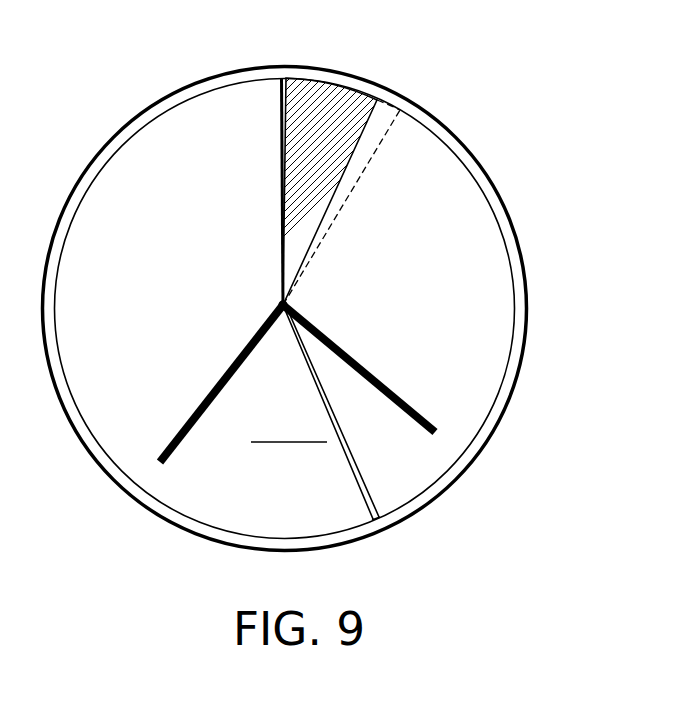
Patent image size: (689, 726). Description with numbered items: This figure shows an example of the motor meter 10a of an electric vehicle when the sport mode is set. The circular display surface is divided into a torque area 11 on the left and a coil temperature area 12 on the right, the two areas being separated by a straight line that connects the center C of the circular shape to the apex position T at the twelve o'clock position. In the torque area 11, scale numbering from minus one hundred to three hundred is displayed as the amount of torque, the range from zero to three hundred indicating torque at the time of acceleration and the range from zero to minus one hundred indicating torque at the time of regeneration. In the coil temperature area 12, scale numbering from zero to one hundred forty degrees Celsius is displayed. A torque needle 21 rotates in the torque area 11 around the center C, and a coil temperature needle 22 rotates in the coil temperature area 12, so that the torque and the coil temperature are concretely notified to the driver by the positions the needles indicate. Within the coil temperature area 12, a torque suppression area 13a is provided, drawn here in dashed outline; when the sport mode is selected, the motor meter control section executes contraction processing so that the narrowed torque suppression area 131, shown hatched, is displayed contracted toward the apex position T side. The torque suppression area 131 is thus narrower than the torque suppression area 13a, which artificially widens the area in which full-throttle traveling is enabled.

The motor meter 10a is at (316, 291).
The torque area 11 is at (102, 158).
The coil temperature area 12 is at (510, 258).
The torque suppression area 13a is at (398, 108).
The torque suppression area 131 is at (322, 92).
The apex position T is at (283, 67).
The center C is at (281, 301).
The torque needle 21 is at (195, 430).
The coil temperature needle 22 is at (402, 410).